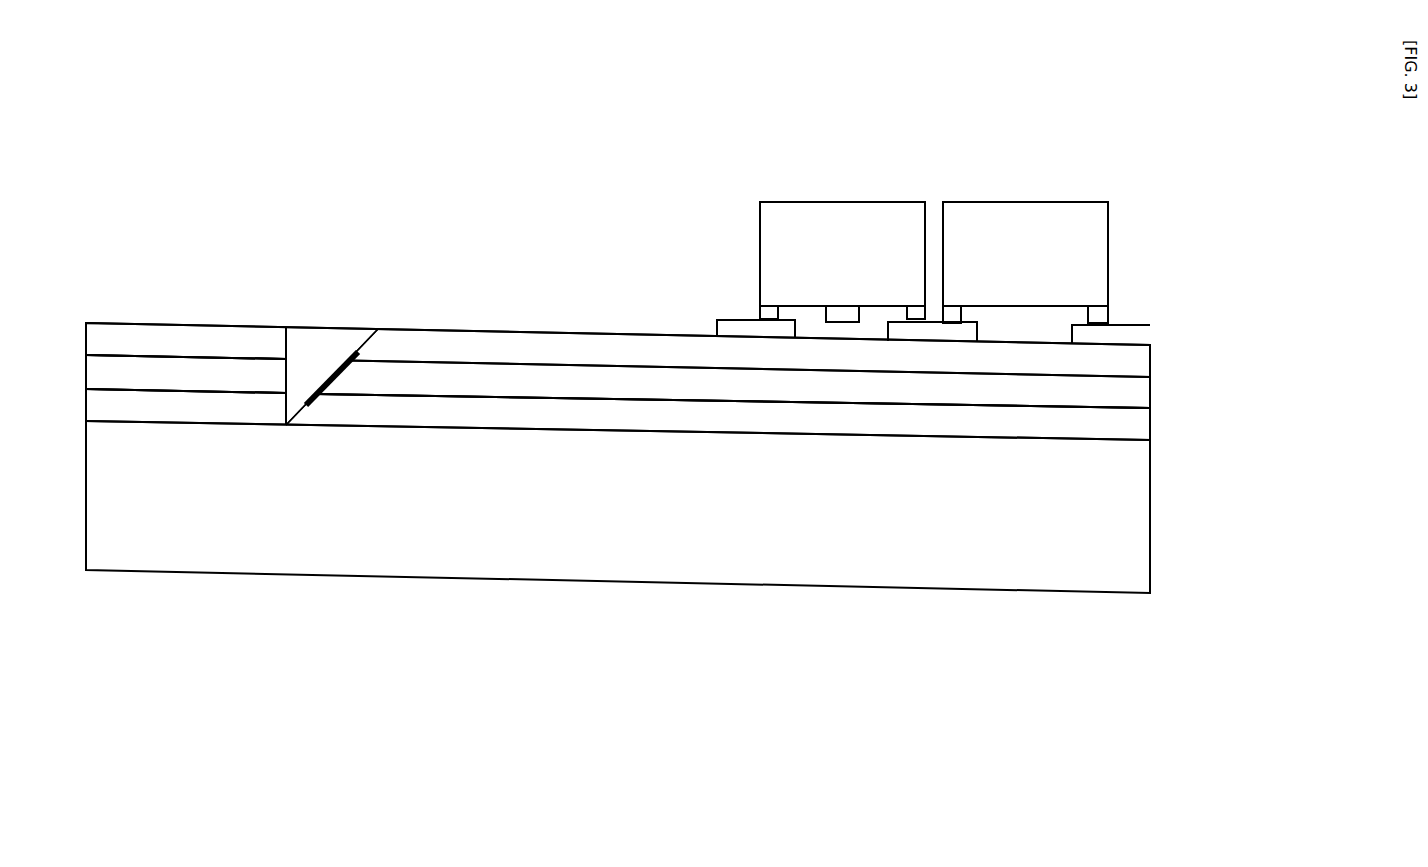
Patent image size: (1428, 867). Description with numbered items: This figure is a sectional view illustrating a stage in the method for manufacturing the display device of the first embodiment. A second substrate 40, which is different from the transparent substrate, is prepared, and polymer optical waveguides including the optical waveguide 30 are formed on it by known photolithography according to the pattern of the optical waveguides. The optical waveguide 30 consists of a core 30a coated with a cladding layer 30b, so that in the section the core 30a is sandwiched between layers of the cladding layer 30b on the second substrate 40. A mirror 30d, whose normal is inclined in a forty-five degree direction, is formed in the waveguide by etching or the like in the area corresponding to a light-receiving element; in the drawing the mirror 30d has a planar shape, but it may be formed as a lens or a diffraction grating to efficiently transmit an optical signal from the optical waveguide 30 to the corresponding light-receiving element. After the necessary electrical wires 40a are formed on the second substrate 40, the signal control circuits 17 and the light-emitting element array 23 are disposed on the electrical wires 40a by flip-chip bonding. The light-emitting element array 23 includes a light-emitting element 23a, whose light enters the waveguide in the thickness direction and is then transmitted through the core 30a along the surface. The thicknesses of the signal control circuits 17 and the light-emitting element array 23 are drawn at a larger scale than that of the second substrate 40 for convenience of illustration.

The signal control circuit 17 is at (1069, 215).
The light-emitting element array 23 is at (885, 215).
The light-emitting element 23a is at (841, 318).
The optical waveguide 30 is at (492, 362).
The core 30a is at (1137, 397).
The cladding layer 30b is at (1137, 360).
The mirror 30d is at (340, 376).
The second substrate 40 is at (1133, 522).
The electrical wire 40a is at (735, 330).